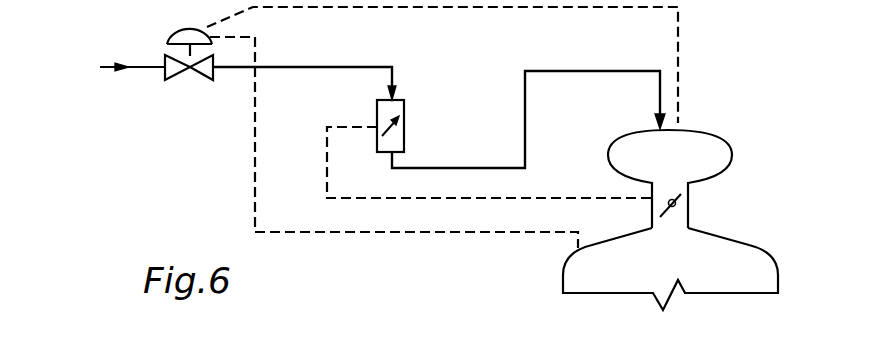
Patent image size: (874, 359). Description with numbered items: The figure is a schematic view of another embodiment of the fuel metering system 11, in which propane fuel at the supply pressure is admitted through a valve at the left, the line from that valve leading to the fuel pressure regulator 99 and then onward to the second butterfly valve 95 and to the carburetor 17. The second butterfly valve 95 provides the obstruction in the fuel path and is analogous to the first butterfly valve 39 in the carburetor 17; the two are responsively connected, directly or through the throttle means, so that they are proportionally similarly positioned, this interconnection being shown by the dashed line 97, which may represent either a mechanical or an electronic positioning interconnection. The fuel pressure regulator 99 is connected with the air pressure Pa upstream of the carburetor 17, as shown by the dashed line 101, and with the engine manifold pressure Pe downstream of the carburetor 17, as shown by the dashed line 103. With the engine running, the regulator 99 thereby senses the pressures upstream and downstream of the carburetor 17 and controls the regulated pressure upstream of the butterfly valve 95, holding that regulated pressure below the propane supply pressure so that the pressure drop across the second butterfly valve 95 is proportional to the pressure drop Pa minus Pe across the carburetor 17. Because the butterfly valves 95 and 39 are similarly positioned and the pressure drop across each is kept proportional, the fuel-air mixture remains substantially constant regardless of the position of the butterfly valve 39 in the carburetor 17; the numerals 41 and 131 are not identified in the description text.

The fuel metering system 11 is at (177, 152).
The control valve 41 is at (157, 64).
The fuel pressure regulator 99 is at (188, 70).
The supply conduit 131 is at (362, 64).
The second butterfly valve 95 is at (405, 120).
The dashed line 97 is at (327, 148).
The dashed line 101 is at (520, 9).
The dashed line 103 is at (428, 233).
The carburetor 17 is at (688, 205).
The butterfly valve 39 is at (670, 196).